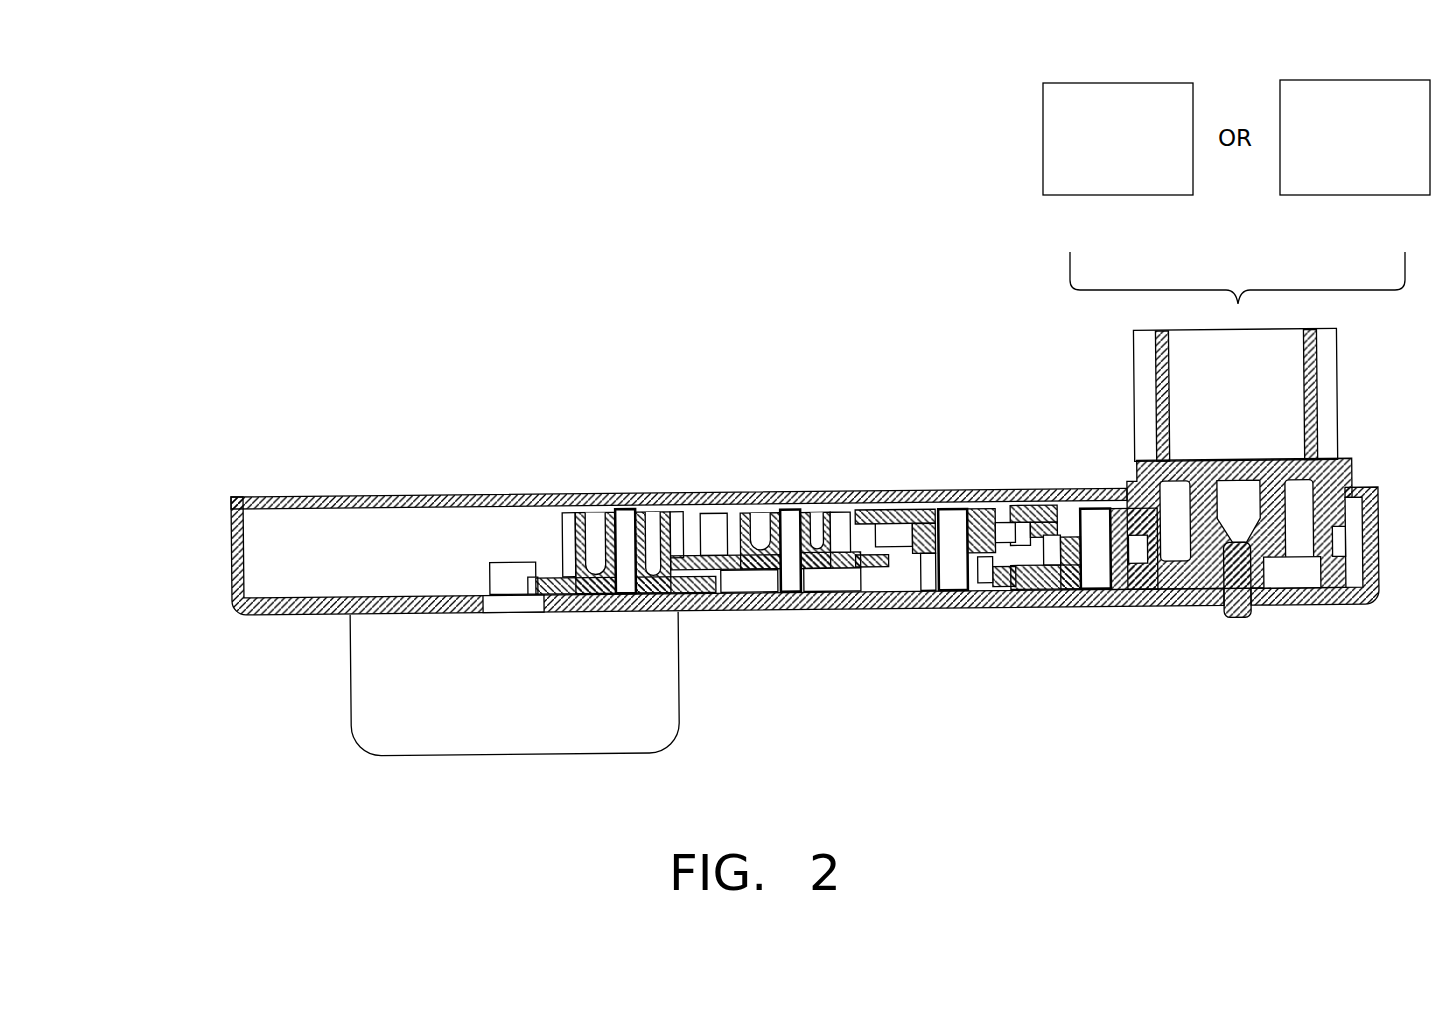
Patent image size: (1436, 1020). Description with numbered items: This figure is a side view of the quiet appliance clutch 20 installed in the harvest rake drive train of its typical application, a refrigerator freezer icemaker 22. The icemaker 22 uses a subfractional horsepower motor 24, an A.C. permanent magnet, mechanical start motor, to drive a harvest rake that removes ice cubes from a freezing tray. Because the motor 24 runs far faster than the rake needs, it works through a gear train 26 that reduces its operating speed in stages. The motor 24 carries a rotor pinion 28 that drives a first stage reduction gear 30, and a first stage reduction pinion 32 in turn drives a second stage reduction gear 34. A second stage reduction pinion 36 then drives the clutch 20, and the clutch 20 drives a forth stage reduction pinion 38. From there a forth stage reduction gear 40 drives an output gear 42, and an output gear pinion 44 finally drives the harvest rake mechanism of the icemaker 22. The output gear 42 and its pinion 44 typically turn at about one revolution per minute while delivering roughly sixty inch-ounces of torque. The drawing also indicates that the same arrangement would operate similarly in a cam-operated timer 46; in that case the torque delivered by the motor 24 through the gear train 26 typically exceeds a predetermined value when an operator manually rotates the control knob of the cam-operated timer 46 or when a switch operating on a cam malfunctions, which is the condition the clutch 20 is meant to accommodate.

The quiet appliance clutch 20 is at (950, 462).
The icemaker 22 is at (1118, 139).
The motor 24 is at (418, 726).
The gear train 26 is at (205, 557).
The rotor pinion 28 is at (505, 573).
The first stage reduction gear 30 is at (575, 598).
The first stage reduction pinion 32 is at (665, 513).
The second stage reduction gear 34 is at (750, 575).
The second stage reduction pinion 36 is at (830, 504).
The forth stage reduction pinion 38 is at (1063, 530).
The forth stage reduction gear 40 is at (1118, 585).
The output gear 42 is at (1118, 525).
The output gear pinion 44 is at (1340, 380).
The cam-operated timer 46 is at (1355, 137).